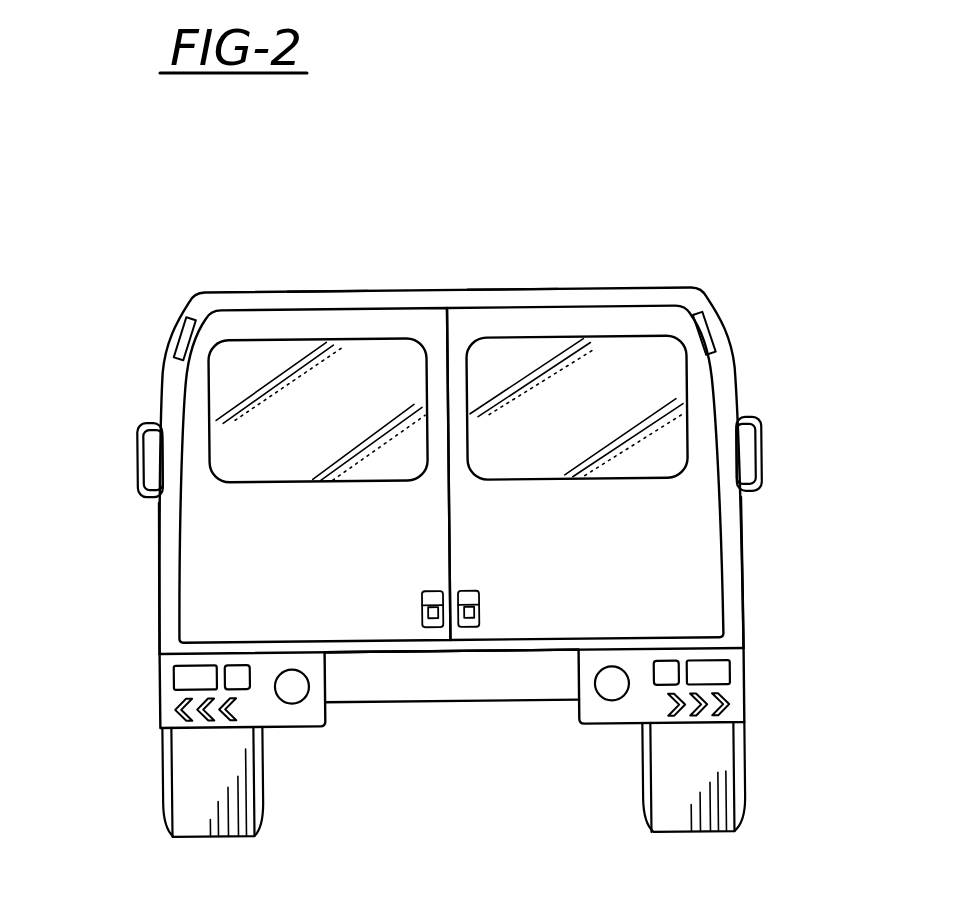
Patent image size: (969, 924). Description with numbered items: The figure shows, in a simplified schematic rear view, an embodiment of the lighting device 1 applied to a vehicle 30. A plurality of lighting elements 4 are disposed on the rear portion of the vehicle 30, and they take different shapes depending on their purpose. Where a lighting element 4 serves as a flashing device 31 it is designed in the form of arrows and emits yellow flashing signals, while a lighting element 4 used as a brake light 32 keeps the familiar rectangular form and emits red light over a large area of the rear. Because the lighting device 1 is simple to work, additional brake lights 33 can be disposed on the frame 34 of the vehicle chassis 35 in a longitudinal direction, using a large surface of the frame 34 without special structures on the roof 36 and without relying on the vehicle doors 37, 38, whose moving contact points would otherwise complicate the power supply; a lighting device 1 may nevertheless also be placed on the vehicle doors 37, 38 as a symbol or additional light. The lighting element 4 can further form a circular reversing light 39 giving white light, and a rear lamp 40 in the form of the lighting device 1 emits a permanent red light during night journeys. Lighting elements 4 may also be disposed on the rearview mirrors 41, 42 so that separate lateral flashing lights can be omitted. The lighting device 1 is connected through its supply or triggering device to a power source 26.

The lighting device 1 is at (218, 738).
The lighting element 4 is at (175, 315).
The power source 26 is at (465, 743).
The vehicle 30 is at (672, 242).
The flashing device 31 is at (190, 745).
The brake light 32 is at (183, 673).
The additional brake light 33 is at (182, 345).
The frame 34 is at (167, 522).
The vehicle chassis 35 is at (508, 283).
The roof 36 is at (327, 290).
The vehicle door 37 is at (710, 505).
The vehicle door 38 is at (190, 480).
The reversing light 39 is at (297, 701).
The rear lamp 40 is at (235, 670).
The rearview mirror 41 is at (757, 457).
The rearview mirror 42 is at (145, 442).